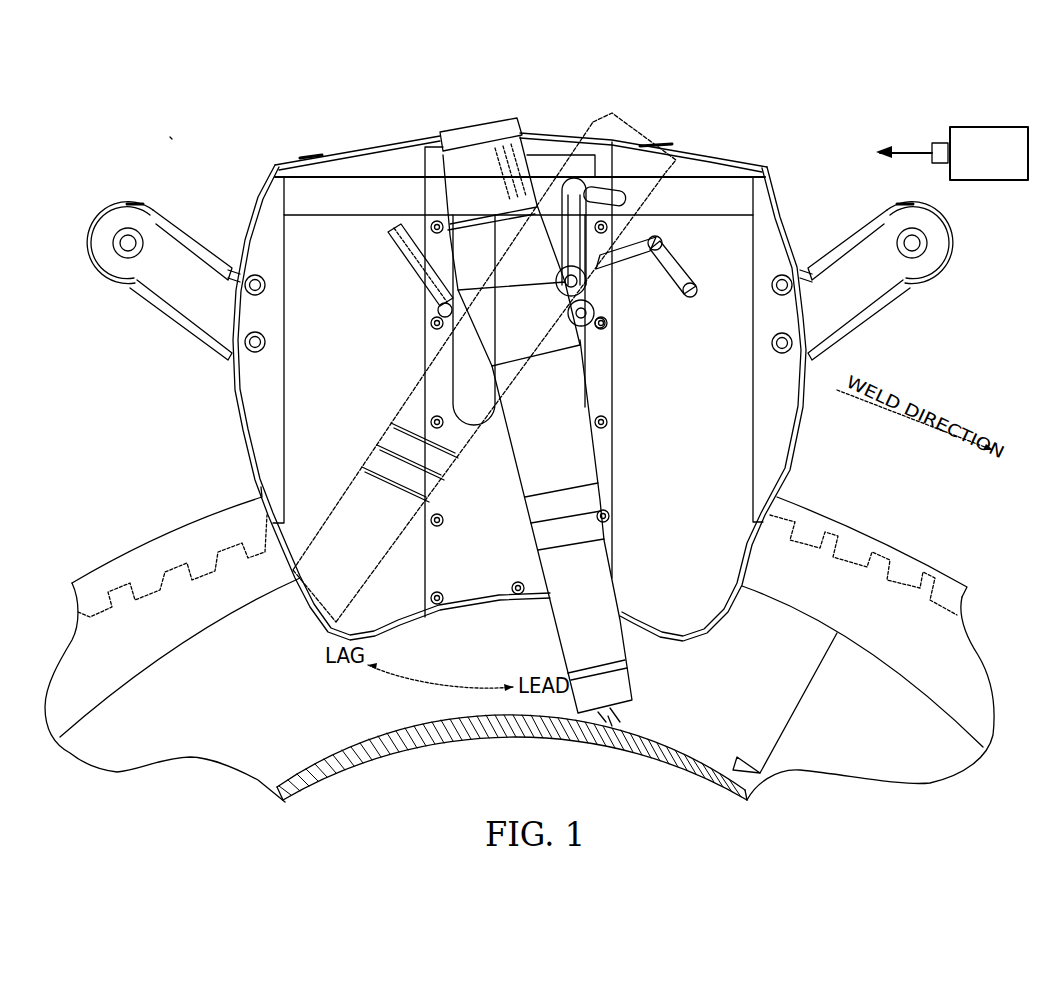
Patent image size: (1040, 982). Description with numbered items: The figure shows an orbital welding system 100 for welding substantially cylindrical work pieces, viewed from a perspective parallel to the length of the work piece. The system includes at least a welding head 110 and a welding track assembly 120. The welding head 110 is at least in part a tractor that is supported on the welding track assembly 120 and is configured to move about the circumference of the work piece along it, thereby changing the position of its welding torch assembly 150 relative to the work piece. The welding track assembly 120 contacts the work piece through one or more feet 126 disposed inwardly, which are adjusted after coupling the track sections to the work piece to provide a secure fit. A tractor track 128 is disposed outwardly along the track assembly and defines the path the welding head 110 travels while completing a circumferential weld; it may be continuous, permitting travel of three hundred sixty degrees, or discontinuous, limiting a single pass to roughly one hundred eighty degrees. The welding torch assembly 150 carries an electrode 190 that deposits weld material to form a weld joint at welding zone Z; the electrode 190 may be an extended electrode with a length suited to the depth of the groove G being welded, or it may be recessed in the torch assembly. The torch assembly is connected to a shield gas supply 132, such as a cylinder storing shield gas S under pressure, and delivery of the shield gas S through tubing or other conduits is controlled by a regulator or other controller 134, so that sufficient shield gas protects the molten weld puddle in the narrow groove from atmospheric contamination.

The orbital welding system 100 is at (165, 136).
The welding head 110 is at (747, 155).
The welding track assembly 120 is at (208, 633).
The feet 126 is at (868, 623).
The tractor track 128 is at (800, 522).
The shield gas supply 132 is at (995, 127).
The regulator or other controller 134 is at (938, 143).
The welding torch assembly 150 is at (536, 163).
The electrode 190 is at (627, 707).
The shield gas S is at (905, 152).
The groove G is at (704, 757).
The welding zone Z is at (613, 720).